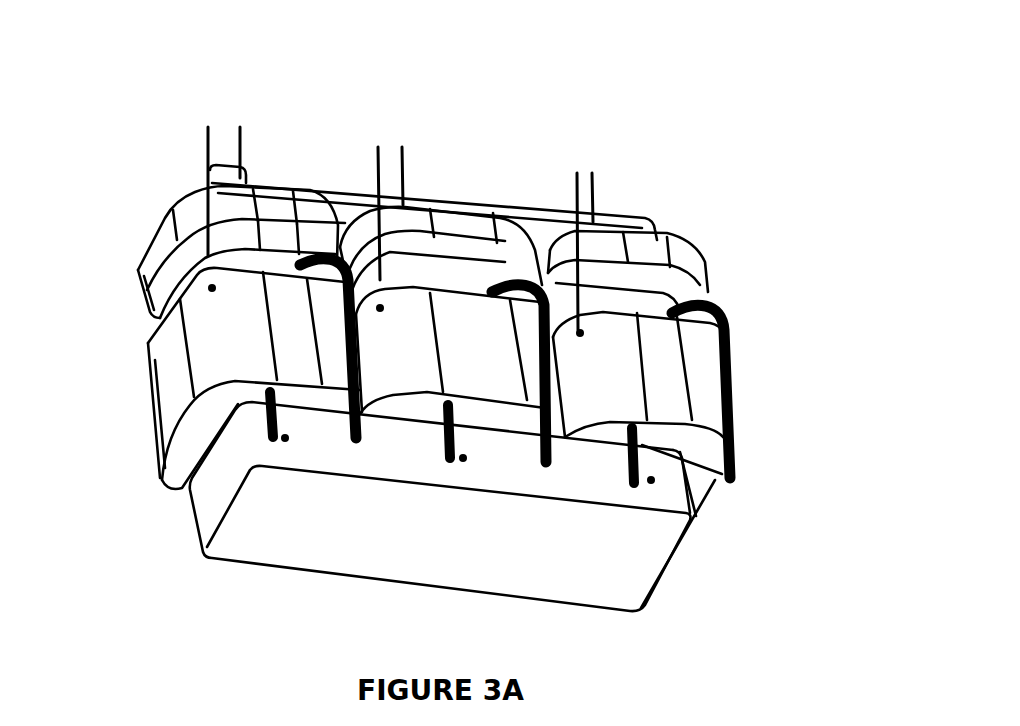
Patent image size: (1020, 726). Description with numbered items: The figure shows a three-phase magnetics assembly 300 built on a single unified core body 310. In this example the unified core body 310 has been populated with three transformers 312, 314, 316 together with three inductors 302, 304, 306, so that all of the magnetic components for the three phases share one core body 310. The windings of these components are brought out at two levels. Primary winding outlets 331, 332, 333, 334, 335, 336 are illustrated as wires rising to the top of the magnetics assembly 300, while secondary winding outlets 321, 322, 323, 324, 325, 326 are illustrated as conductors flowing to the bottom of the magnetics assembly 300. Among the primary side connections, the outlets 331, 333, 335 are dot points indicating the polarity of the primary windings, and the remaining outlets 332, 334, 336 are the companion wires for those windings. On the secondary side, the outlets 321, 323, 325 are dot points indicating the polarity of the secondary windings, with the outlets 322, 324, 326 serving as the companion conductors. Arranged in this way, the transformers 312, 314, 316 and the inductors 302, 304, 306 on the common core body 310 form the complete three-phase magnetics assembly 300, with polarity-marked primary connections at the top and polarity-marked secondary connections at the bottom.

The three-phase magnetics assembly 300 is at (573, 83).
The inductor 302 is at (695, 237).
The inductor 304 is at (465, 200).
The inductor 306 is at (150, 227).
The unified core body 310 is at (452, 506).
The transformer 312 is at (148, 387).
The transformer 314 is at (702, 379).
The transformer 316 is at (450, 350).
The secondary winding outlet 321 is at (262, 428).
The secondary winding outlet 322 is at (347, 445).
The secondary winding outlet 323 is at (627, 489).
The secondary winding outlet 324 is at (737, 477).
The secondary winding outlet 325 is at (446, 463).
The secondary winding outlet 326 is at (544, 466).
The primary winding outlet 331 is at (580, 168).
The primary winding outlet 332 is at (595, 190).
The primary winding outlet 333 is at (383, 147).
The primary winding outlet 334 is at (411, 170).
The primary winding outlet 335 is at (212, 120).
The primary winding outlet 336 is at (243, 146).